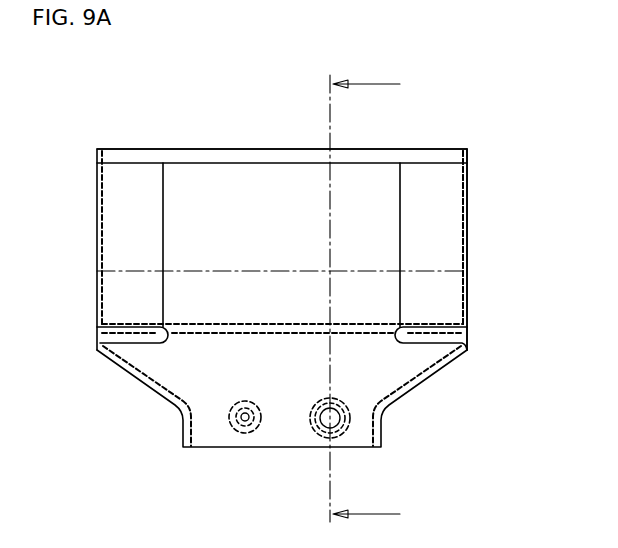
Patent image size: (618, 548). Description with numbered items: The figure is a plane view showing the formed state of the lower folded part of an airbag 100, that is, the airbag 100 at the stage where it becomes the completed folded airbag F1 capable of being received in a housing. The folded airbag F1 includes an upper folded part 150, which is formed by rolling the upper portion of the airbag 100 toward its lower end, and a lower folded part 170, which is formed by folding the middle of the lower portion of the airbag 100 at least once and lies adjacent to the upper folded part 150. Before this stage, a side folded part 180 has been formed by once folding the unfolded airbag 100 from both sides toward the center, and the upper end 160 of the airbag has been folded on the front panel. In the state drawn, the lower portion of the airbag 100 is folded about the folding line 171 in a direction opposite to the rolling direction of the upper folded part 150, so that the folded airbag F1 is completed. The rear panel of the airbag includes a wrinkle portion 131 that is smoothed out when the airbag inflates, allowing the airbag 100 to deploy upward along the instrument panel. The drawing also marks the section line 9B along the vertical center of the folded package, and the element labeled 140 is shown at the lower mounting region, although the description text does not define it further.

The airbag 100 is at (200, 208).
The wrinkle portion 131 is at (143, 272).
The mounting bracket 140 is at (273, 448).
The upper folded part 150 is at (257, 150).
The upper end 160 is at (468, 183).
The lower folded part 170 is at (433, 255).
The folding line 171 is at (202, 162).
The side folded part 180 is at (440, 317).
The folded airbag F1 is at (137, 134).
The section line 9B is at (367, 300).